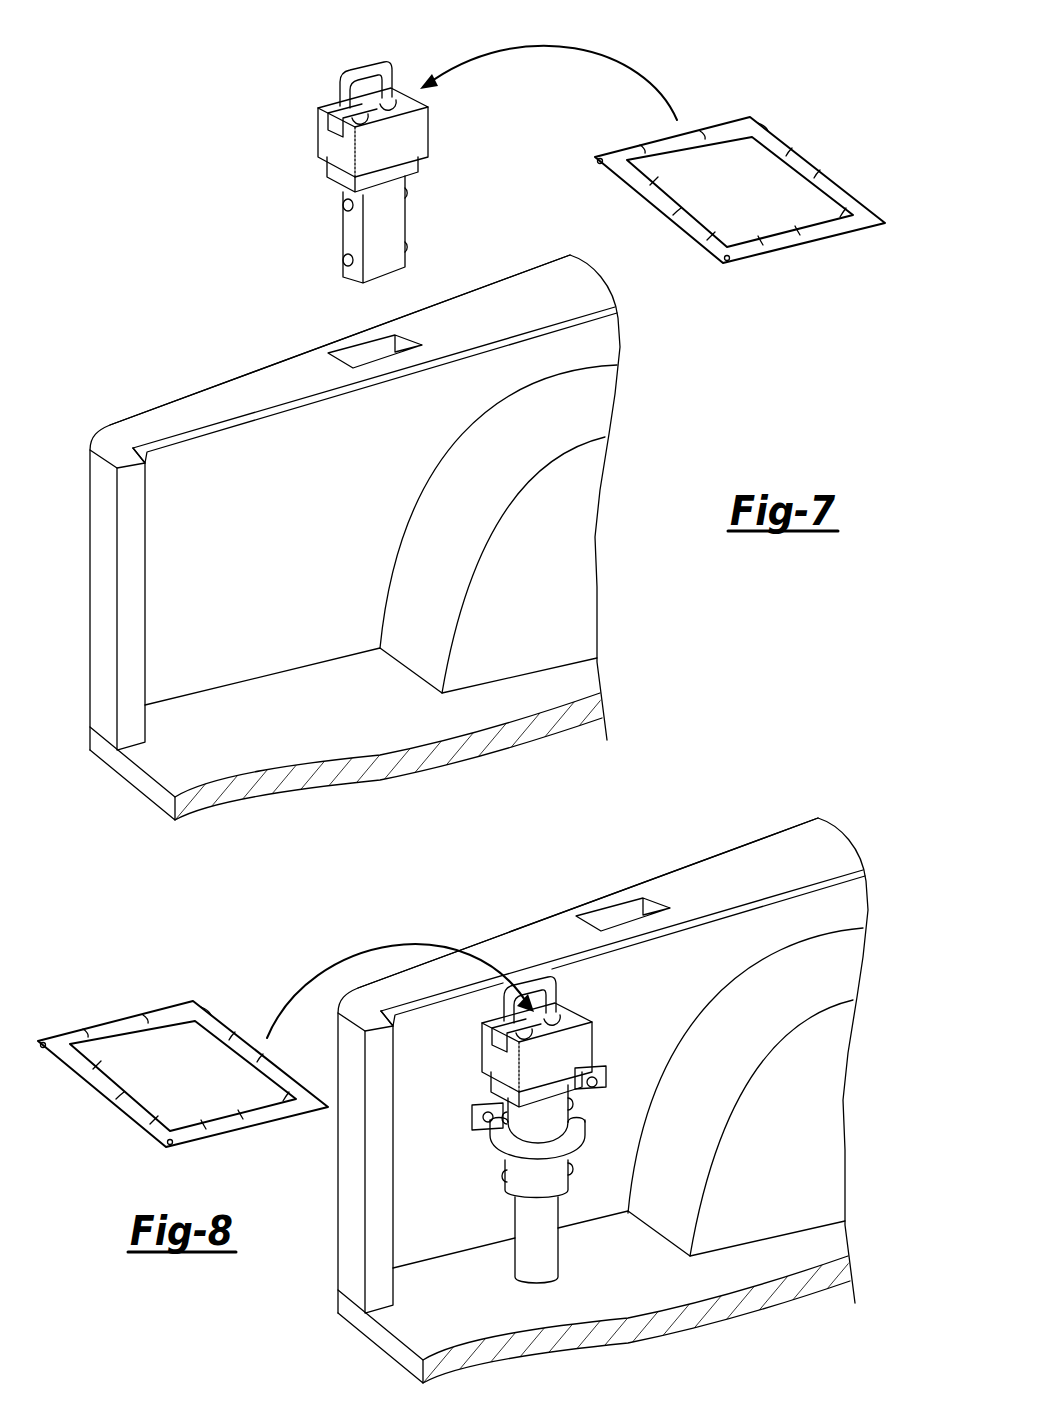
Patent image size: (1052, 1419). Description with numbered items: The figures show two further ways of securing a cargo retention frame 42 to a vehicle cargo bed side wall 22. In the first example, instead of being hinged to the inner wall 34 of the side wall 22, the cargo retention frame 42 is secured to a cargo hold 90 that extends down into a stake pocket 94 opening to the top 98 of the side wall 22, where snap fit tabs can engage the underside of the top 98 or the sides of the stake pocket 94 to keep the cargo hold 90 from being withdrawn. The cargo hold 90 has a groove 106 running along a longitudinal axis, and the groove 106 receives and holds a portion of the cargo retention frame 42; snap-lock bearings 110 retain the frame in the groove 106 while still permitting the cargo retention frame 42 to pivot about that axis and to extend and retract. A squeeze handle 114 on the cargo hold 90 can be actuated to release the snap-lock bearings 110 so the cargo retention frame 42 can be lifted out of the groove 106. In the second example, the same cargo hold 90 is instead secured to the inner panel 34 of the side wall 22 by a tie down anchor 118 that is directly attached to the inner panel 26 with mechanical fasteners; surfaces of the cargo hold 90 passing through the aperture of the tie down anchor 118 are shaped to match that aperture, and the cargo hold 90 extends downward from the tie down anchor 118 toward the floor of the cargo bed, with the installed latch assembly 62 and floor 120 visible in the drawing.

In FIG. 7, the side wall 22 is at (500, 263).
In FIG. 8, the side wall 22 is at (755, 810).
In FIG. 8, the inner panel 26 is at (745, 1032).
In FIG. 7, the inner wall 34 is at (205, 565).
In FIG. 7, the cargo retention frame 42 is at (775, 142).
In FIG. 8, the cargo retention frame 42 is at (172, 1013).
In FIG. 8, the latch assembly 62 is at (590, 1020).
In FIG. 7, the cargo hold 90 is at (420, 140).
In FIG. 7, the stake pocket 94 is at (405, 343).
In FIG. 7, the top 98 is at (190, 410).
In FIG. 7, the groove 106 is at (304, 129).
In FIG. 8, the groove 106 is at (481, 1044).
In FIG. 7, the snap-lock bearings 110 is at (418, 97).
In FIG. 7, the squeeze handle 114 is at (364, 78).
In FIG. 8, the tie down anchor 118 is at (503, 1147).
In FIG. 8, the floor 120 is at (633, 1334).